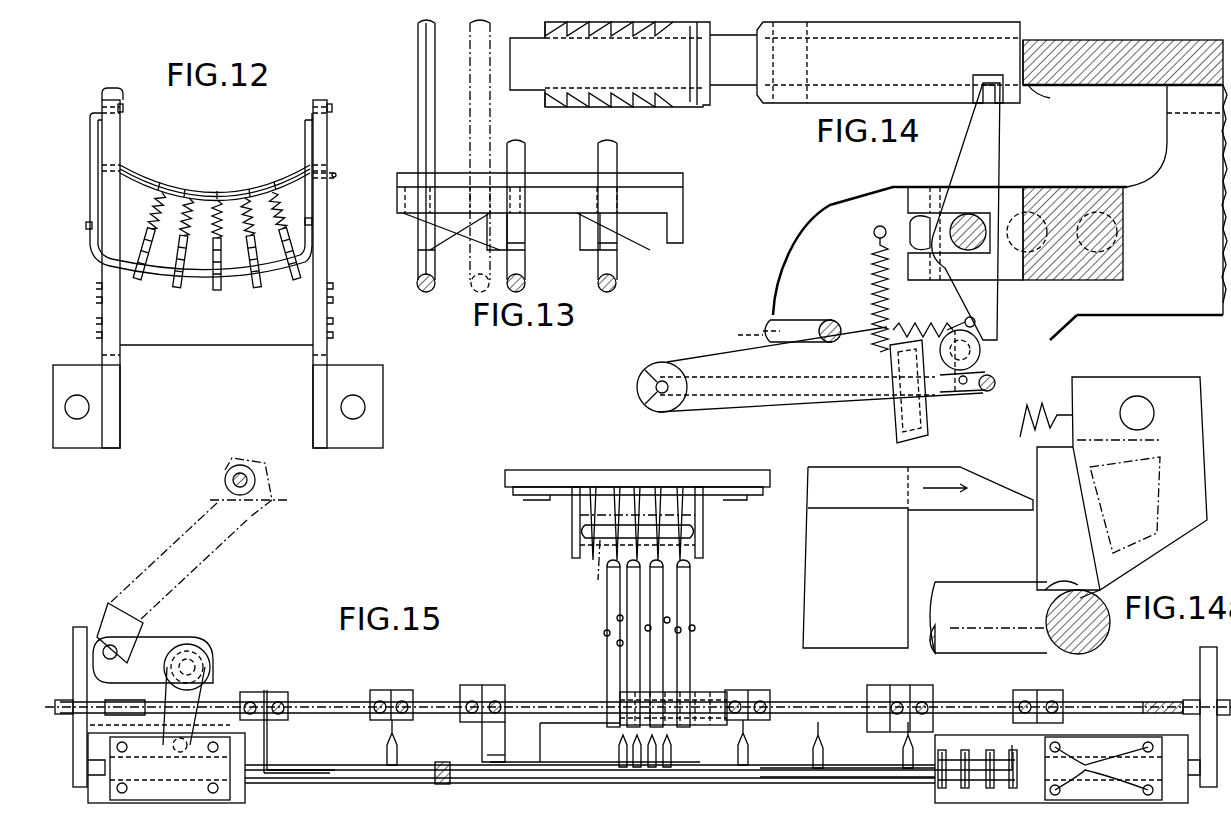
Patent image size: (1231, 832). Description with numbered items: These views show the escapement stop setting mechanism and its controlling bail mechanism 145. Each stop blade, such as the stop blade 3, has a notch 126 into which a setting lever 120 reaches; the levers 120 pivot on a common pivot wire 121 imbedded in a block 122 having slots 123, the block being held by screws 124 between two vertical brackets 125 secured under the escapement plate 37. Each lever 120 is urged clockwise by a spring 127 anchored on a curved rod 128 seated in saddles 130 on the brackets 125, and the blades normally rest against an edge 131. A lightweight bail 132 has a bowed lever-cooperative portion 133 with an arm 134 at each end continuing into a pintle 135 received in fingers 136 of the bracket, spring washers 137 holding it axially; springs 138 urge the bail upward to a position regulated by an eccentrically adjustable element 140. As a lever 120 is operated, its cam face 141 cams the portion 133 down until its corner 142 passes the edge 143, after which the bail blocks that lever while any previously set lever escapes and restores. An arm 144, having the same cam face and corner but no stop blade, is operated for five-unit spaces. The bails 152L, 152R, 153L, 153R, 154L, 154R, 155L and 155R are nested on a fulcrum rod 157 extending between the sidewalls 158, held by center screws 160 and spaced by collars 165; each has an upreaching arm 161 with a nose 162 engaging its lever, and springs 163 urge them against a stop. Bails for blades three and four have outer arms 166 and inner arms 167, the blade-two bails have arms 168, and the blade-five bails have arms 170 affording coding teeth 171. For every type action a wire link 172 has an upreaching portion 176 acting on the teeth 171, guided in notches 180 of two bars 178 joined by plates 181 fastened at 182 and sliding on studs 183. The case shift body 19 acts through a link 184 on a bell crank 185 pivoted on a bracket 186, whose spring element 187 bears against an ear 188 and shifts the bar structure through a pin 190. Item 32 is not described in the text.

In FIG. 14, the stop blade 3 is at (808, 103).
In FIG. 15, the case shift body 19 is at (209, 539).
In FIG. 13, the adjusting screw 32 is at (545, 60).
In FIG. 14, the escapement plate 37 is at (1140, 86).
In FIG. 15, the escapement plate 37 is at (593, 475).
In FIG. 12, the setting lever 120 is at (180, 290).
In FIG. 14, the setting lever 120 is at (998, 135).
In FIG. 14A, the setting lever 120 is at (1195, 415).
In FIG. 15, the setting lever 120 is at (630, 490).
In FIG. 14, the pivot wire 121 is at (950, 218).
In FIG. 15, the pivot wire 121 is at (670, 522).
In FIG. 12, the block 122 is at (212, 345).
In FIG. 14, the block 122 is at (1123, 272).
In FIG. 15, the block 122 is at (600, 575).
In FIG. 14, the slots 123 is at (1015, 185).
In FIG. 12, the screws 124 is at (334, 320).
In FIG. 14, the screws 124 is at (1077, 282).
In FIG. 12, the brackets 125 is at (327, 358).
In FIG. 14, the brackets 125 is at (1167, 140).
In FIG. 15, the brackets 125 is at (704, 518).
In FIG. 14, the notch 126 is at (978, 100).
In FIG. 12, the spring 127 is at (190, 226).
In FIG. 14, the spring 127 is at (915, 322).
In FIG. 14A, the spring 127 is at (1028, 440).
In FIG. 12, the rod 128 is at (140, 178).
In FIG. 14, the rod 128 is at (798, 320).
In FIG. 12, the saddles 130 is at (331, 174).
In FIG. 14, the saddles 130 is at (736, 331).
In FIG. 14, the edge 131 is at (1033, 90).
In FIG. 12, the bail 132 is at (241, 295).
In FIG. 14, the bail 132 is at (978, 400).
In FIG. 12, the lever-cooperative portion 133 is at (217, 290).
In FIG. 14, the lever-cooperative portion 133 is at (990, 392).
In FIG. 14A, the lever-cooperative portion 133 is at (1108, 628).
In FIG. 12, the arm 134 is at (91, 160).
In FIG. 14, the arm 134 is at (845, 392).
In FIG. 14A, the arm 134 is at (1005, 590).
In FIG. 12, the pintle 135 is at (124, 109).
In FIG. 14, the pintle 135 is at (660, 365).
In FIG. 14, the fingers 136 is at (692, 362).
In FIG. 12, the spring washers 137 is at (101, 91).
In FIG. 14, the spring washers 137 is at (648, 400).
In FIG. 12, the springs 138 is at (88, 225).
In FIG. 14, the springs 138 is at (873, 250).
In FIG. 14, the eccentrically adjustable element 140 is at (982, 345).
In FIG. 14, the cam face 141 is at (962, 392).
In FIG. 14, the corner 142 is at (952, 395).
In FIG. 14A, the corner 142 is at (1052, 585).
In FIG. 14, the edge 143 is at (996, 383).
In FIG. 14A, the edge 143 is at (1110, 590).
In FIG. 12, the arm 144 is at (140, 286).
In FIG. 15, the arm 144 is at (692, 566).
In FIG. 15, the bail mechanism 145 is at (712, 684).
In FIG. 15, the bail 152R is at (430, 775).
In FIG. 15, the bail 152L is at (805, 768).
In FIG. 13, the bail 153R is at (625, 245).
In FIG. 15, the bail 153R is at (328, 765).
In FIG. 15, the bail 153L is at (875, 777).
In FIG. 13, the bail 154R is at (684, 192).
In FIG. 15, the bail 154R is at (440, 775).
In FIG. 15, the bail 154L is at (712, 765).
In FIG. 15, the bail 155R is at (505, 685).
In FIG. 15, the bail 155L is at (870, 685).
In FIG. 15, the fulcrum rod 157 is at (326, 700).
In FIG. 15, the sidewalls 158 is at (80, 625).
In FIG. 15, the center screws 160 is at (90, 712).
In FIG. 14, the upreaching arm 161 is at (900, 413).
In FIG. 14A, the upreaching arm 161 is at (900, 568).
In FIG. 15, the upreaching arm 161 is at (690, 612).
In FIG. 14, the nose 162 is at (965, 318).
In FIG. 14A, the nose 162 is at (985, 502).
In FIG. 15, the springs 163 is at (603, 633).
In FIG. 15, the collars 165 is at (408, 690).
In FIG. 15, the outer arms 166 is at (285, 722).
In FIG. 15, the inner arms 167 is at (618, 752).
In FIG. 15, the arms 168 is at (400, 735).
In FIG. 15, the arms 170 is at (482, 748).
In FIG. 13, the teeth 171 is at (432, 258).
In FIG. 15, the teeth 171 is at (497, 760).
In FIG. 13, the wire link 172 is at (470, 105).
In FIG. 13, the upreaching portion 176 is at (426, 292).
In FIG. 15, the upreaching portion 176 is at (958, 752).
In FIG. 15, the bars 178 is at (262, 775).
In FIG. 15, the notches 180 is at (1018, 777).
In FIG. 15, the plates 181 is at (205, 737).
In FIG. 15, the spot welds or rivets 182 is at (1101, 768).
In FIG. 15, the studs 183 is at (90, 778).
In FIG. 15, the link 184 is at (112, 602).
In FIG. 15, the bell crank 185 is at (165, 637).
In FIG. 15, the bracket 186 is at (198, 644).
In FIG. 15, the spring element 187 is at (205, 690).
In FIG. 15, the ear 188 is at (170, 722).
In FIG. 15, the pin 190 is at (178, 752).